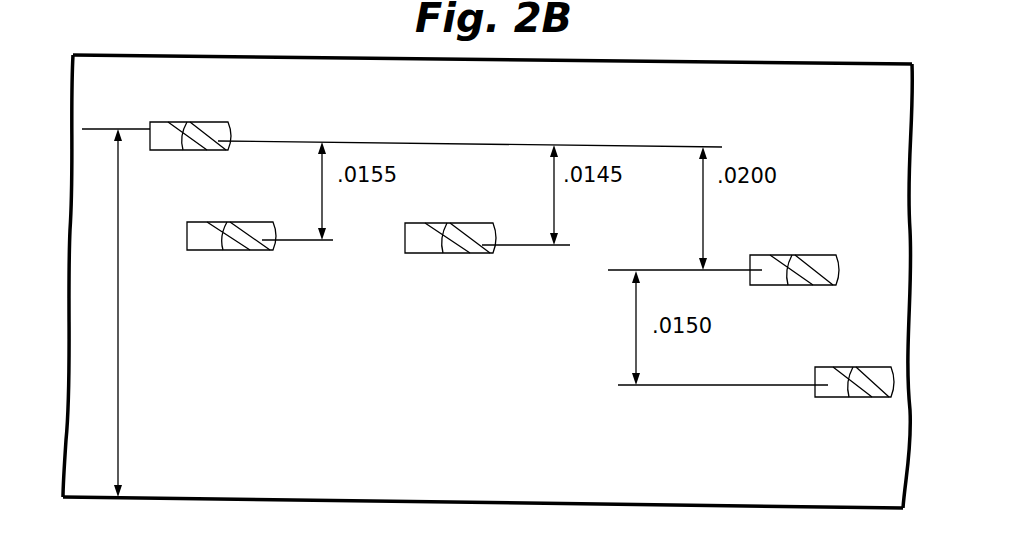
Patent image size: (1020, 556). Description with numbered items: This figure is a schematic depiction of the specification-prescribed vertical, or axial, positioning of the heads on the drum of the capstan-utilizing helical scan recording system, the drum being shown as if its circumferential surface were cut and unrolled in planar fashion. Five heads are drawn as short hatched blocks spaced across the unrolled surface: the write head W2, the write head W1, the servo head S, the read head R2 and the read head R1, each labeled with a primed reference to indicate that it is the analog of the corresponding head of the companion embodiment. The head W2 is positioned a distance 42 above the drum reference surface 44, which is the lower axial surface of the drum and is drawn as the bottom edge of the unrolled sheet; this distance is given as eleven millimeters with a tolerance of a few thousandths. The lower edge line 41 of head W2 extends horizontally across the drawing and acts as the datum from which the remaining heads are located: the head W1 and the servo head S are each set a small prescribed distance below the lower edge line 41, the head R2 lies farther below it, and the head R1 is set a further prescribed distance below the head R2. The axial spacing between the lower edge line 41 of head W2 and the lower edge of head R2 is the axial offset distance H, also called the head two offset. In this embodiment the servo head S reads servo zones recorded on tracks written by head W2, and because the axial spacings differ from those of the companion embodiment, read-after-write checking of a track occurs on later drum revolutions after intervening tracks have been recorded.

The lower edge line of head W2 41 is at (475, 145).
The distance 42 is at (119, 313).
The drum reference surface 44 is at (478, 504).
The head W2 is at (190, 120).
The head W1 is at (260, 219).
The servo head S is at (487, 224).
The head R2 is at (723, 254).
The head R1 is at (756, 369).
The axial offset distance H is at (702, 215).